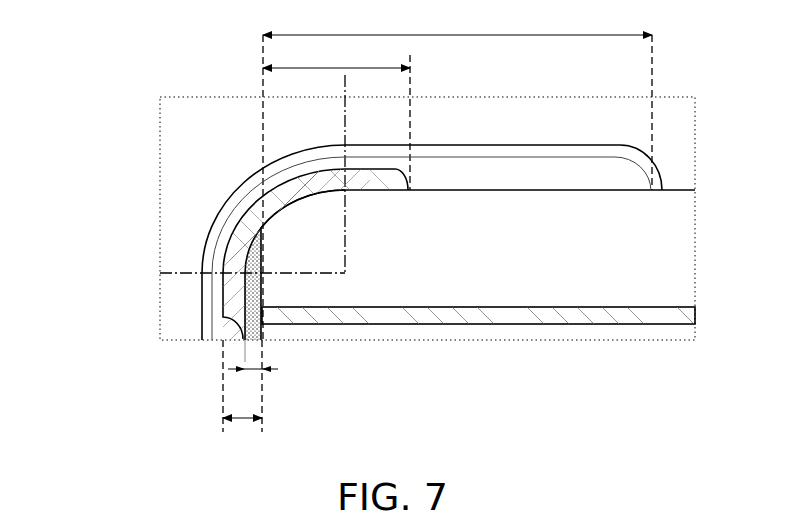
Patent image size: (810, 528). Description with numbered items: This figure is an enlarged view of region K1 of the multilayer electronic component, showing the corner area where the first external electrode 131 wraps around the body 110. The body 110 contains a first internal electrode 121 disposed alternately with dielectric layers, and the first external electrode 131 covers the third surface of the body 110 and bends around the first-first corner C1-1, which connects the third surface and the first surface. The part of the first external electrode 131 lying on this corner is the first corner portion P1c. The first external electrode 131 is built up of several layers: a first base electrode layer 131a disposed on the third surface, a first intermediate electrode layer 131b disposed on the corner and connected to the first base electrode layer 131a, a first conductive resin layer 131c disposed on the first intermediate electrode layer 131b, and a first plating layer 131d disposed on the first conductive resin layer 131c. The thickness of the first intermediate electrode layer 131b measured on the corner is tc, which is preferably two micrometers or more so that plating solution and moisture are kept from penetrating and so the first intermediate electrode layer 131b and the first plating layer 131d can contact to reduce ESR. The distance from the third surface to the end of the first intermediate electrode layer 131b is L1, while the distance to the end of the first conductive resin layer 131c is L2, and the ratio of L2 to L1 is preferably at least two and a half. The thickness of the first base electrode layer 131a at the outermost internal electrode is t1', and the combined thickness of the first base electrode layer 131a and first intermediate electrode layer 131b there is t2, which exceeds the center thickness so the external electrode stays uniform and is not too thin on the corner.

The body 110 is at (677, 190).
The first internal electrode 121 is at (693, 319).
The first external electrode 131 is at (72, 218).
The first base electrode layer 131a is at (207, 240).
The first intermediate electrode layer 131b is at (216, 260).
The first conductive resin layer 131c is at (222, 289).
The first plating layer 131d is at (204, 318).
The 1-1-th corner C1-1 is at (248, 215).
The first corner portion P1c is at (224, 188).
The thickness of the first intermediate electrode layer on the first corner tc is at (279, 238).
The distance to end of first intermediate electrode layer L1 is at (336, 56).
The distance to end of first conductive resin layer L2 is at (457, 23).
The thickness of the first base electrode layer at the outermost internal electrode t1' is at (253, 383).
The sum of thicknesses of the first base electrode layer and first intermediate elec t2 is at (242, 434).
The region K1 is at (447, 447).